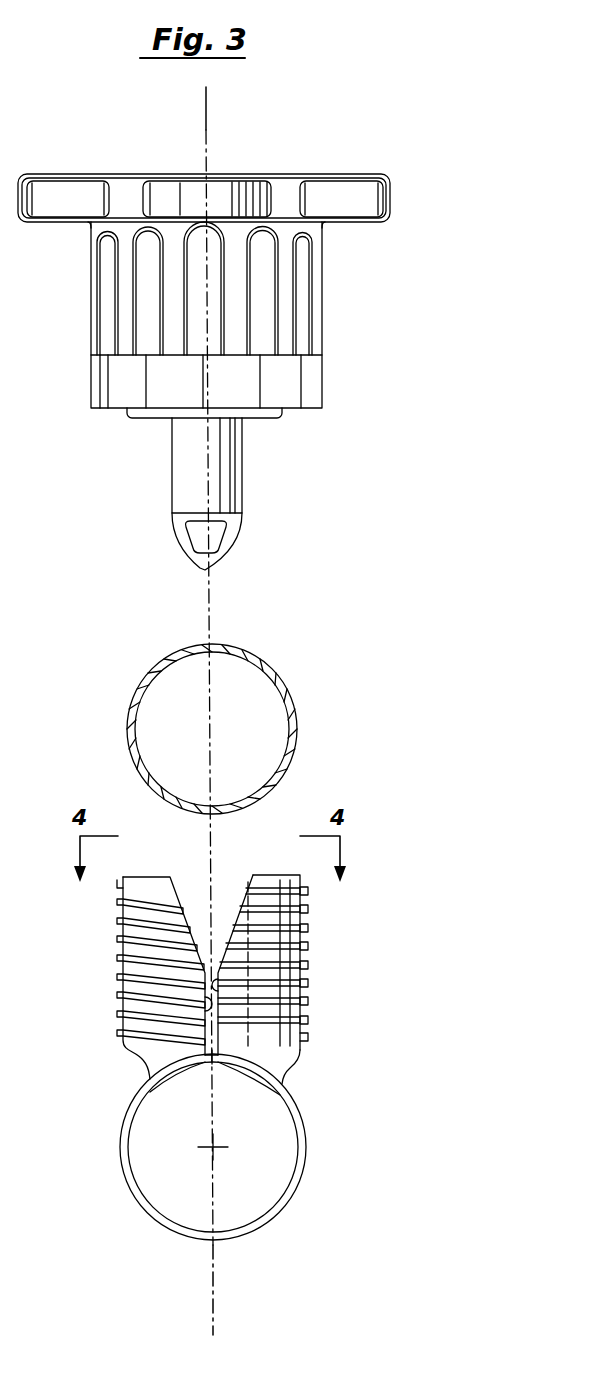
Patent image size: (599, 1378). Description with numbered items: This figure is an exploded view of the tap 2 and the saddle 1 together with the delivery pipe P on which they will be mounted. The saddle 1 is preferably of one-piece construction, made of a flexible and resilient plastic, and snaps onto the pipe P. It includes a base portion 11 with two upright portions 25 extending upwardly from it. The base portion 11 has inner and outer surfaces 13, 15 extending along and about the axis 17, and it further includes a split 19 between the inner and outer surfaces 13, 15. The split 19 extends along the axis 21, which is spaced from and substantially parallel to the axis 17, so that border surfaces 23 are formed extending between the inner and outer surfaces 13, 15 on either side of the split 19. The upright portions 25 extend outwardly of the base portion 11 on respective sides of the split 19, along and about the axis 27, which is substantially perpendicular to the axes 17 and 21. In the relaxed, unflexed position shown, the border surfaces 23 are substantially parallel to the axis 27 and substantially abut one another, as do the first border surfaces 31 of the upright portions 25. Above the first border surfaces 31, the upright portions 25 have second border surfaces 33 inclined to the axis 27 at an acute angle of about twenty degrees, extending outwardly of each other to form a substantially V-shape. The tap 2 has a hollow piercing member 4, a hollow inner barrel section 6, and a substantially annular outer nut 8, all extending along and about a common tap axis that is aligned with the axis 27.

The saddle 1 is at (220, 957).
The tap 2 is at (205, 291).
The piercing member 4 is at (172, 485).
The inner barrel section 6 is at (141, 410).
The outer nut 8 is at (91, 292).
The base portion 11 is at (193, 1157).
The inner surface 13 is at (150, 1200).
The outer surface 15 is at (163, 1220).
The axis 17 is at (216, 1150).
The split 19 is at (196, 1088).
The axis 21 is at (214, 1062).
The border surfaces 23 is at (142, 1092).
The upright portions 25 is at (104, 958).
The axis 27 is at (206, 113).
The first border surfaces 31 is at (205, 1000).
The second border surfaces 33 is at (178, 892).
The pipe P is at (248, 655).